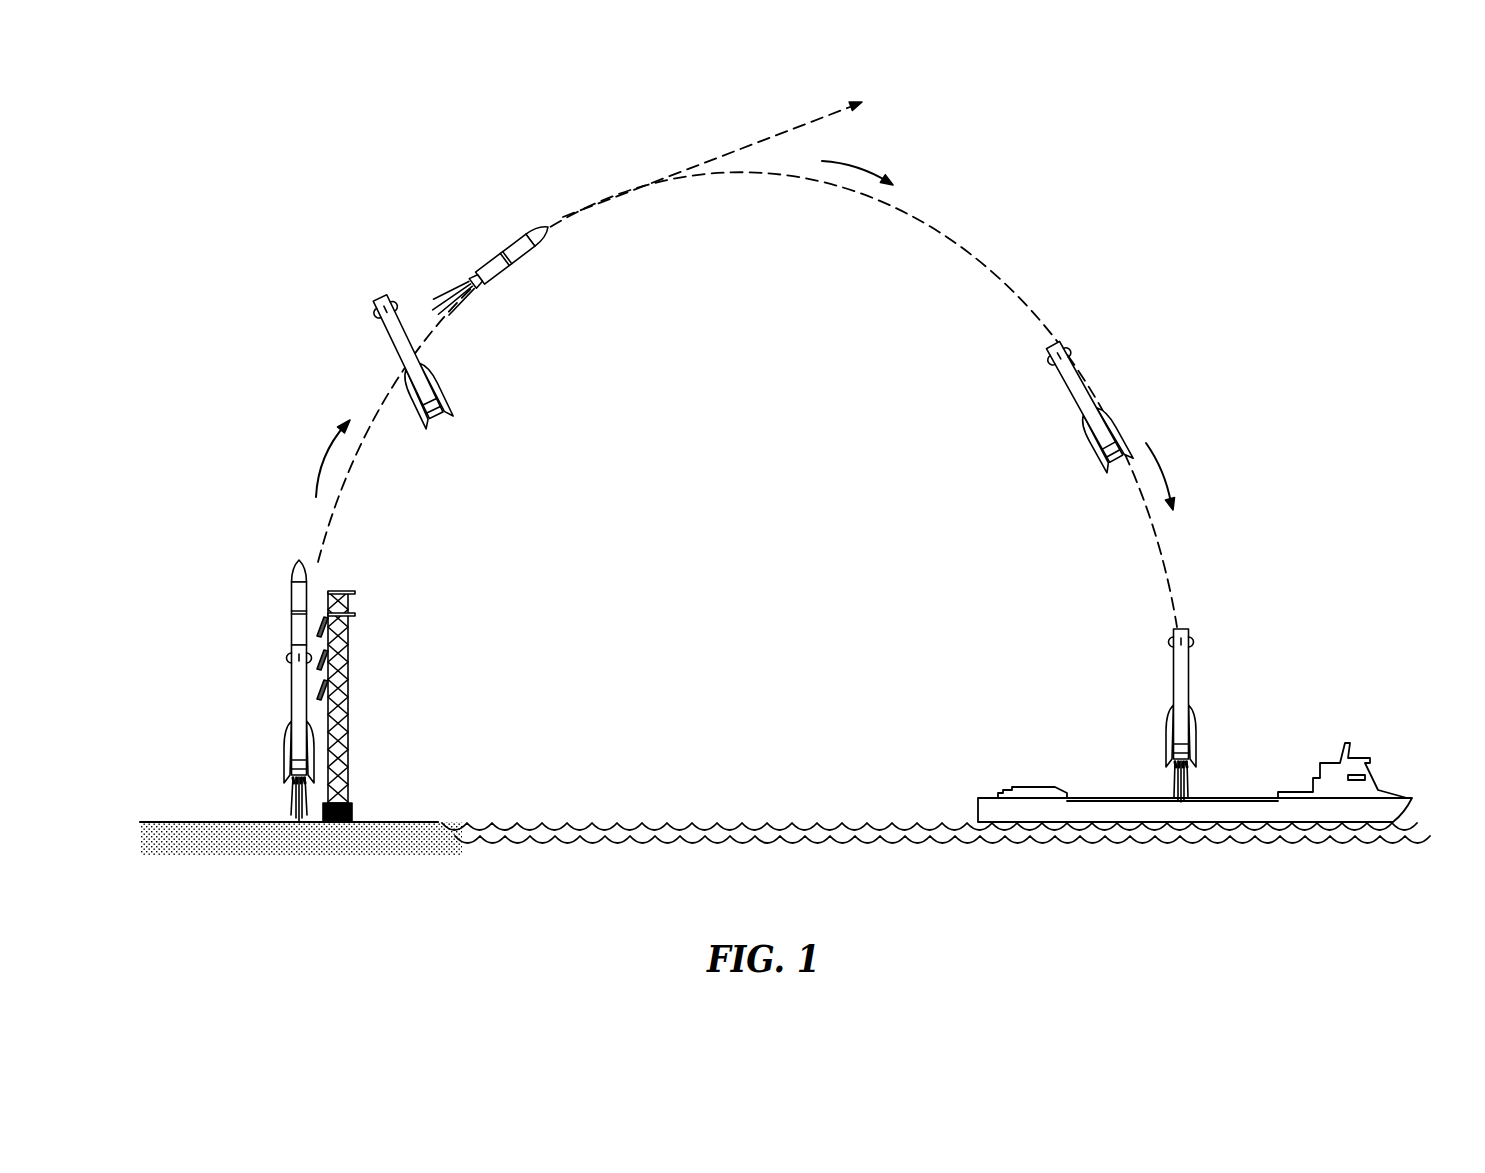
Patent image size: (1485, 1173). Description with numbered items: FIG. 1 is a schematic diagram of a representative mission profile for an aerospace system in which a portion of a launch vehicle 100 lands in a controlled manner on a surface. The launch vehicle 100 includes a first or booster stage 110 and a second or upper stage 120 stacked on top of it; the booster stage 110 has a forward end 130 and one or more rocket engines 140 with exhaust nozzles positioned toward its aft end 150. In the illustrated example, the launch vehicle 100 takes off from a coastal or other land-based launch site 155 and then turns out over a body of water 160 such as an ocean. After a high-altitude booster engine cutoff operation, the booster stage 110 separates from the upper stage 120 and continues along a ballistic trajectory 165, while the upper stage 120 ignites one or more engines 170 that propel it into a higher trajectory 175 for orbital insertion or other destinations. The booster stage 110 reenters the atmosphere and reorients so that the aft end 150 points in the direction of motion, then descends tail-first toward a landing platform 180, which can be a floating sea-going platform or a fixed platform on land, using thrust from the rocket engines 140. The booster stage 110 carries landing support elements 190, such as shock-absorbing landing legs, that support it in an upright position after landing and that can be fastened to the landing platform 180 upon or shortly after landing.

The launch vehicle 100 is at (731, 514).
The booster stage 110 is at (731, 558).
The upper stage 120 is at (443, 426).
The forward end 130 is at (280, 646).
The rocket engines 140 is at (296, 781).
The aft end 150 is at (280, 771).
The launch site 155 is at (395, 822).
The body of water 160 is at (732, 824).
The ballistic trajectory 165 is at (958, 245).
The engines 170 is at (497, 306).
The higher trajectory 175 is at (768, 133).
The landing platform 180 is at (1327, 762).
The landing support elements 190 is at (1163, 777).